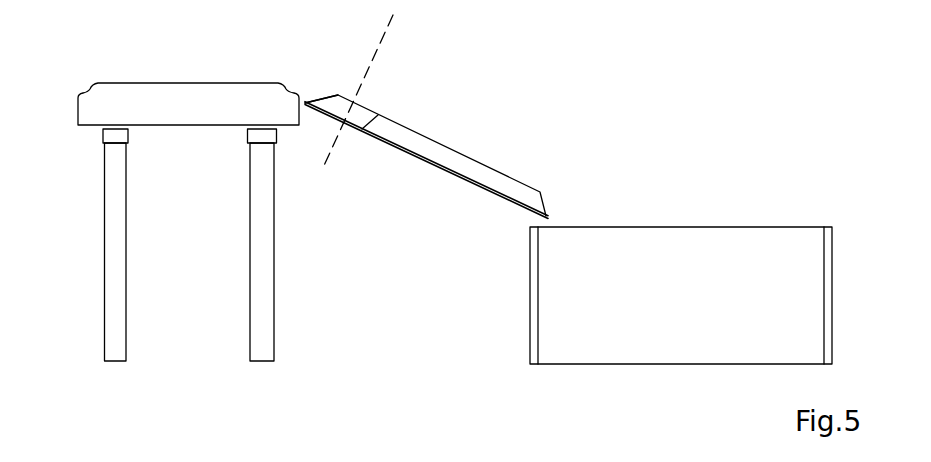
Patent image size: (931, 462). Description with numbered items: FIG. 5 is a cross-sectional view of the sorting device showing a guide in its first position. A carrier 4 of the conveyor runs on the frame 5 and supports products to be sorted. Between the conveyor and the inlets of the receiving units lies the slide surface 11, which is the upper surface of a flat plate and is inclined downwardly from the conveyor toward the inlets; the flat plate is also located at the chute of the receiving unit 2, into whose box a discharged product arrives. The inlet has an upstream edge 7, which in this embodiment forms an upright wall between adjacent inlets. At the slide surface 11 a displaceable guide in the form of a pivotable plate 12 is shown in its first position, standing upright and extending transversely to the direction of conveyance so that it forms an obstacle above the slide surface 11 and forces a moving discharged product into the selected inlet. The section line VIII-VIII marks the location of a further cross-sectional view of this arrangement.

The receiving unit 2 is at (530, 203).
The carrier 4 is at (176, 82).
The frame 5 is at (110, 260).
The upstream edge 7 is at (485, 173).
The slide surface 11 is at (308, 100).
The pivotable plate 12 is at (367, 117).
The section line VIII- VIII is at (440, 43).